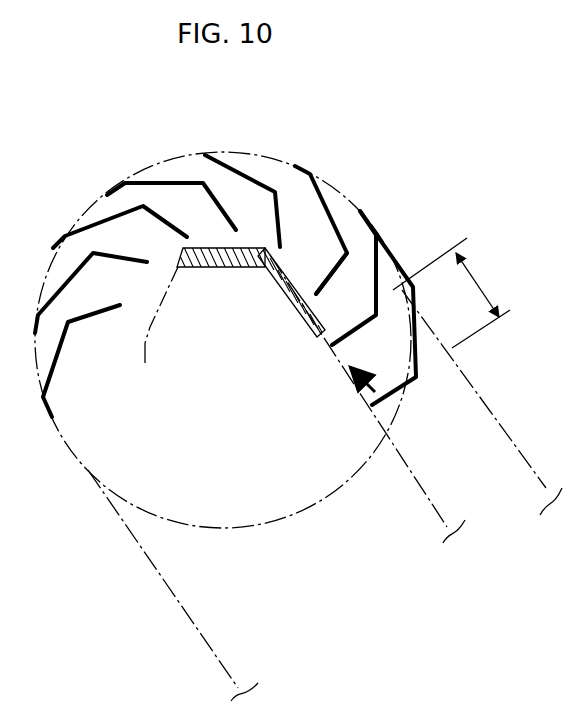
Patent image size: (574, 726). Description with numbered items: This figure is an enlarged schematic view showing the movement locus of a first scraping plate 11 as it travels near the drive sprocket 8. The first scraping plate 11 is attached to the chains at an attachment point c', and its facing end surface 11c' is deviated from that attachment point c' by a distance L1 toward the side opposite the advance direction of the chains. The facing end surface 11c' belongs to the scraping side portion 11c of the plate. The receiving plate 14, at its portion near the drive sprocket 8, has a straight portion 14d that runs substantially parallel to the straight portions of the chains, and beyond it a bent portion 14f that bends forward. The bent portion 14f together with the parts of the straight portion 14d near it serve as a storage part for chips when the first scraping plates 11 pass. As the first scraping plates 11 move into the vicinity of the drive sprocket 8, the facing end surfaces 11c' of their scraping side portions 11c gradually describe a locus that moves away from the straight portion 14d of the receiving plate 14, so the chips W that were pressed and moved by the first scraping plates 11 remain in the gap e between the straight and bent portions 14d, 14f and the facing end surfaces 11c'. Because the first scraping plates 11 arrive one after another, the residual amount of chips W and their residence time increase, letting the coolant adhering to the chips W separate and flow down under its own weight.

The drive sprocket 8 is at (290, 521).
The first scraping plate 11 is at (286, 280).
The scraping side portion 11c is at (185, 215).
The facing end surface 11c' is at (307, 323).
The receiving plate 14 is at (325, 446).
The straight portion 14d is at (288, 291).
The bent portion 14f is at (238, 258).
The chips W is at (238, 258).
The gap e is at (283, 253).
The attachment point c' is at (425, 227).
The distance L1 is at (481, 282).